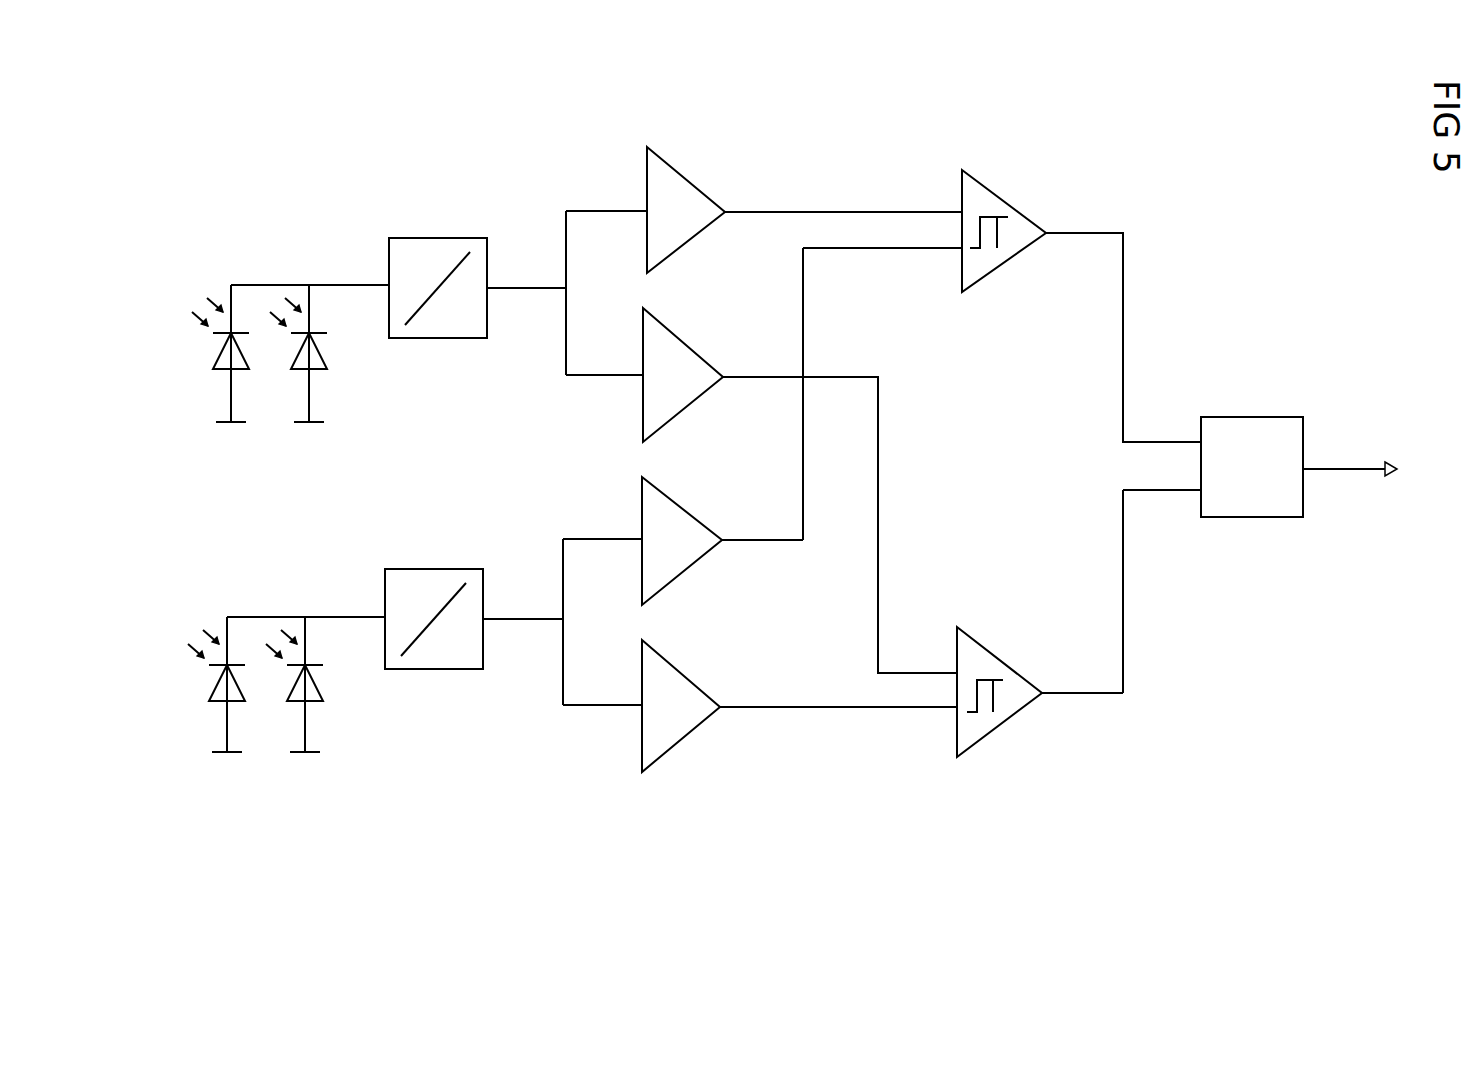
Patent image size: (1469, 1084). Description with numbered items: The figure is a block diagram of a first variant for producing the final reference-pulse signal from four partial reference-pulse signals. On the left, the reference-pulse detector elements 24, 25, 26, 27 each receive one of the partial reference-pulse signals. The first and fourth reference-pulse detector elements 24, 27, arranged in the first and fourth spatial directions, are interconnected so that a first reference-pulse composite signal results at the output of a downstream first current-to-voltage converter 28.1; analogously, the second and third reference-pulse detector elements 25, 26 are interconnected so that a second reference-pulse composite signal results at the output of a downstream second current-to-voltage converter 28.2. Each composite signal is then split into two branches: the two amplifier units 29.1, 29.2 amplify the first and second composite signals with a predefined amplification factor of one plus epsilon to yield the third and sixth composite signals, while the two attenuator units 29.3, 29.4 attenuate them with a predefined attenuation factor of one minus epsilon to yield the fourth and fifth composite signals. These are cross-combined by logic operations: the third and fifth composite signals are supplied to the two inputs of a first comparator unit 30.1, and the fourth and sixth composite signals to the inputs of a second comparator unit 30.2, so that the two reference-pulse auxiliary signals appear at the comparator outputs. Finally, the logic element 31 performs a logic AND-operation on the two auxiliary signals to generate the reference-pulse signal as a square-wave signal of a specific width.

The first reference-pulse detector element 24 is at (220, 393).
The second reference-pulse detector element 25 is at (215, 728).
The third reference-pulse detector element 26 is at (297, 720).
The fourth reference-pulse detector element 27 is at (300, 393).
The first current-to-voltage converter 28.1 is at (430, 248).
The second current-to-voltage converter 28.2 is at (430, 580).
The amplifier unit 29.1 is at (647, 178).
The amplifier unit 29.2 is at (655, 742).
The attenuator unit 29.3 is at (657, 413).
The attenuator unit 29.4 is at (642, 505).
The first comparator unit 30.1 is at (988, 255).
The second comparator unit 30.2 is at (1005, 680).
The logic element 31 is at (1250, 505).